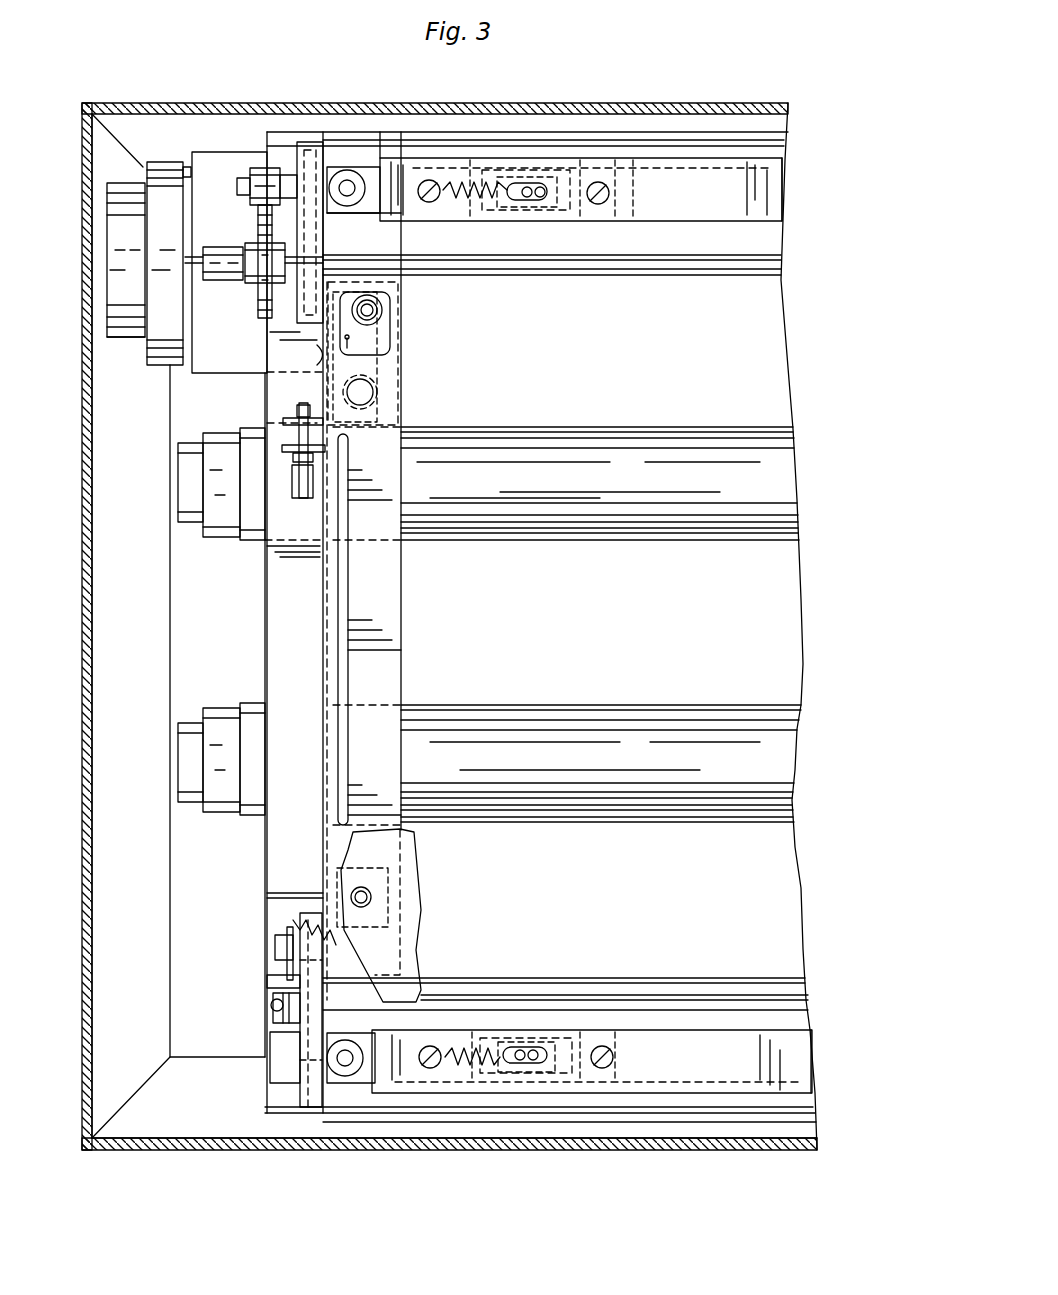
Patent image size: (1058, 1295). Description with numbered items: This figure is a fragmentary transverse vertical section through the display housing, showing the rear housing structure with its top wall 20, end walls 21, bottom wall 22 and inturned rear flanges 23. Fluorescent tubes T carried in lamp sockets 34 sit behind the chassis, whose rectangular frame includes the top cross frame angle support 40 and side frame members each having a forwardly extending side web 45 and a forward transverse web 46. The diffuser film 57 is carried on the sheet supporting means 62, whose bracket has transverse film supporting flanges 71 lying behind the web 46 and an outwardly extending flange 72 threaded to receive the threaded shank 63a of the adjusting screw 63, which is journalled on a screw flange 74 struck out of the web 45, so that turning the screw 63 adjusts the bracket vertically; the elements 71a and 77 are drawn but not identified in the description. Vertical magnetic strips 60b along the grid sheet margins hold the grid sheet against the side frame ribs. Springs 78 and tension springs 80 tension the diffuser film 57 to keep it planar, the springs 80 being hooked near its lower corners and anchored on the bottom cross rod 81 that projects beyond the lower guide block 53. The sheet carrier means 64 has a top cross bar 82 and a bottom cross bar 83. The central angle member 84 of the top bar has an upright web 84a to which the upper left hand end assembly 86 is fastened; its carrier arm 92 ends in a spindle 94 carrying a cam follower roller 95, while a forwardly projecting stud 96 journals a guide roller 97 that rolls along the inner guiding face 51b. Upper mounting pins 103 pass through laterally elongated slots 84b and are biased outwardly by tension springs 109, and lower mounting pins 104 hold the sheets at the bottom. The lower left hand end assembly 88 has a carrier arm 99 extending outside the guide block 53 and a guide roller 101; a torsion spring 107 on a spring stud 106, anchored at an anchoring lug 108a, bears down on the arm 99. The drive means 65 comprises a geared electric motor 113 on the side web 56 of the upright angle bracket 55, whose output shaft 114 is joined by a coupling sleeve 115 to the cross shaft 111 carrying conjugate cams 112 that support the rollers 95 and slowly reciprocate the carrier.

The top wall 20 is at (248, 114).
The end walls 21 is at (93, 462).
The bottom wall 22 is at (270, 1150).
The inturned rear flanges 23 is at (150, 118).
The fluorescent lamp sockets 34 is at (188, 520).
The top cross frame angle support 40 is at (277, 131).
The side web 45 is at (320, 595).
The forward transverse web 46 is at (404, 493).
The inner guiding face 51b is at (318, 238).
The lower left hand guide block 53 is at (308, 910).
The upright angle bracket 55 is at (218, 160).
The side web 56 is at (190, 160).
The diffuser film 57 is at (414, 876).
The vertical strips of magnetic material 60b is at (348, 615).
The sheet supporting means 62 is at (278, 408).
The adjusting screw means 63 is at (302, 490).
The threaded shank 63a is at (302, 395).
The sheet carrier means 64 is at (800, 167).
The drive means 65 is at (122, 168).
The transverse film supporting flanges 71 is at (390, 385).
The bushing 71a is at (395, 318).
The outwardly extending flange 72 is at (283, 420).
The screw flange 74 is at (280, 447).
The hole 77 is at (375, 405).
The springs 78 is at (405, 358).
The tension springs 80 is at (293, 920).
The bottom cross rod 81 is at (622, 1000).
The top cross bar 82 is at (800, 204).
The bottom cross bar 83 is at (840, 1076).
The central angle member 84 is at (668, 157).
The upright web 84a is at (640, 220).
The laterally elongated slot 84b is at (547, 183).
The upper left hand end assembly 86 is at (460, 222).
The lower left hand end assembly 88 is at (447, 1027).
The carrier arm 92 is at (380, 170).
The spindle 94 is at (240, 185).
The cam follower roller 95 is at (255, 206).
The forwardly projecting stud 96 is at (365, 205).
The guide roller 97 is at (347, 170).
The carrier arm 99 is at (270, 1045).
The guide roller 101 is at (350, 1075).
The upper mounting pins 103 is at (527, 205).
The lower mounting pins 104 is at (525, 1050).
The spring studs 106 is at (270, 1005).
The torsion springs 107 is at (285, 930).
The anchoring lug 108a is at (275, 950).
The tension spring 109 is at (455, 185).
The cross shaft 111 is at (722, 272).
The conjugate cams 112 is at (255, 330).
The geared electric motor 113 is at (128, 350).
The output shaft 114 is at (220, 273).
The coupling sleeve 115 is at (232, 270).
The fluorescent tubes T is at (250, 540).